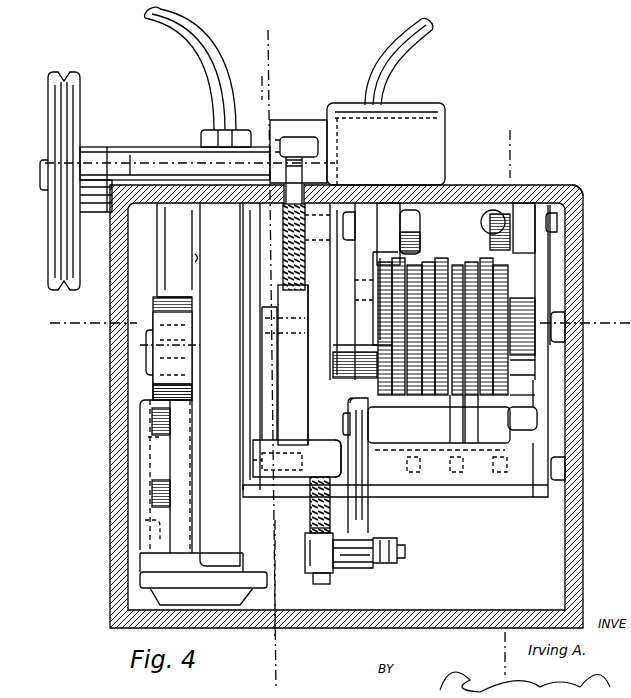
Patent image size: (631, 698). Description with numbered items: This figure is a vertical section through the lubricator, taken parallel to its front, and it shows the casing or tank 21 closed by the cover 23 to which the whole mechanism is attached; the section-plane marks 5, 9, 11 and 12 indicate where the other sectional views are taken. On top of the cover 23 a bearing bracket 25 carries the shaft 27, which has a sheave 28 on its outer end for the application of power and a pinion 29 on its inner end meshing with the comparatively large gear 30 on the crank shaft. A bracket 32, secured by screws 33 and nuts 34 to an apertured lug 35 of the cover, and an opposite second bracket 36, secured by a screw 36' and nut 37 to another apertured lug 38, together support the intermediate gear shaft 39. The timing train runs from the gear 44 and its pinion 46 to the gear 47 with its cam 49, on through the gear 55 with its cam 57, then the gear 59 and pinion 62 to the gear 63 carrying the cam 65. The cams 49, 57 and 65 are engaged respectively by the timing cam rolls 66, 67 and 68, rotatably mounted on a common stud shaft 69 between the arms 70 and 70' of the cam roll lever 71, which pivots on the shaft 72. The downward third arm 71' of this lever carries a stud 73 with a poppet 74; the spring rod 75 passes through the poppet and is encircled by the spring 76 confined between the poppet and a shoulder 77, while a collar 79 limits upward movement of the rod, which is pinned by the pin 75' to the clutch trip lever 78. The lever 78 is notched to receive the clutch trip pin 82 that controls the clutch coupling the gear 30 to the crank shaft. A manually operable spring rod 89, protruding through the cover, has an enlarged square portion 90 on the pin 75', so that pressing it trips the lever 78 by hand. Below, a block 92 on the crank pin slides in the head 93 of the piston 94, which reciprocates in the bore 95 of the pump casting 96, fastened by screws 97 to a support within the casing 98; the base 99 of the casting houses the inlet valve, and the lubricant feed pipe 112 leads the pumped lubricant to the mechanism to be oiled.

The casing or tank 21 is at (109, 585).
The cover 23 is at (585, 201).
The bearing bracket 25 is at (172, 147).
The shaft 27 is at (138, 160).
The sheave 28 is at (78, 82).
The pinion 29 is at (338, 134).
The gear 30 is at (310, 386).
The bracket 32 is at (578, 266).
The screws 33 is at (493, 210).
The nuts 34 is at (500, 218).
The apertured lug 35 is at (525, 222).
The second bracket 36 is at (319, 291).
The screw 36' is at (355, 202).
The nut 37 is at (414, 214).
The apertured lug 38 is at (389, 215).
The intermediate gear shaft 39 is at (578, 302).
The gear 44 is at (378, 291).
The pinion 46 is at (384, 375).
The gear 47 is at (398, 248).
The cam 49 is at (420, 258).
The gear 55 is at (444, 258).
The cam 57 is at (458, 262).
The gear 59 is at (471, 398).
The pinion 62 is at (490, 312).
The gear 63 is at (490, 257).
The cam 65 is at (500, 372).
The timing cam roll 66 is at (410, 426).
The timing cam roll 67 is at (456, 428).
The timing cam roll 68 is at (500, 400).
The stud shaft 69 is at (344, 428).
The arm 70 is at (350, 410).
The arm 70' is at (555, 411).
The cam roll lever 71 is at (395, 364).
The third arm 71' is at (382, 465).
The shaft 72 is at (565, 470).
The stud 73 is at (410, 551).
The poppet 74 is at (307, 546).
The spring rod 75 is at (305, 505).
The pin or stud 75' is at (358, 458).
The spring 76 is at (318, 531).
The shoulder 77 is at (310, 450).
The clutch trip lever 78 is at (266, 416).
The collar 79 is at (333, 576).
The clutch trip pin 82 is at (286, 365).
The manually operable spring rod 89 is at (285, 181).
The enlarged extended square portion 90 is at (275, 381).
The block 92 is at (162, 378).
The head 93 is at (152, 318).
The piston 94 is at (152, 332).
The bore 95 is at (148, 523).
The pump casting 96 is at (168, 447).
The screws 97 is at (150, 492).
The casing 98 is at (199, 261).
The base 99 is at (139, 557).
The lubricant feed pipe 112 is at (188, 33).
The section line 5 is at (53, 323).
The section line 9 is at (495, 143).
The section line 11 is at (256, 50).
The section line 12 is at (251, 84).